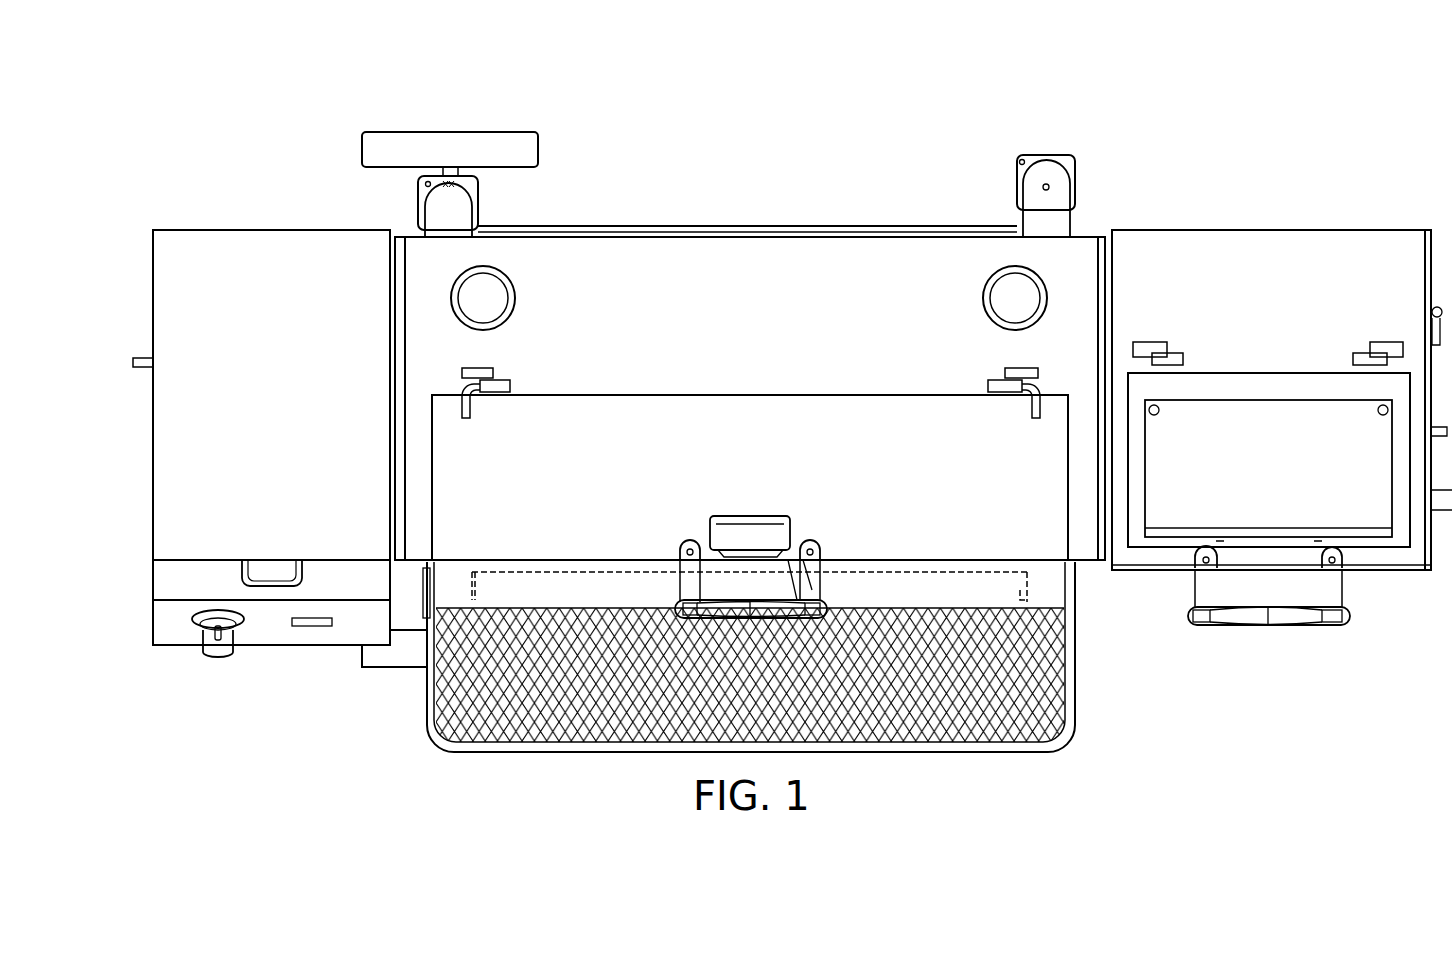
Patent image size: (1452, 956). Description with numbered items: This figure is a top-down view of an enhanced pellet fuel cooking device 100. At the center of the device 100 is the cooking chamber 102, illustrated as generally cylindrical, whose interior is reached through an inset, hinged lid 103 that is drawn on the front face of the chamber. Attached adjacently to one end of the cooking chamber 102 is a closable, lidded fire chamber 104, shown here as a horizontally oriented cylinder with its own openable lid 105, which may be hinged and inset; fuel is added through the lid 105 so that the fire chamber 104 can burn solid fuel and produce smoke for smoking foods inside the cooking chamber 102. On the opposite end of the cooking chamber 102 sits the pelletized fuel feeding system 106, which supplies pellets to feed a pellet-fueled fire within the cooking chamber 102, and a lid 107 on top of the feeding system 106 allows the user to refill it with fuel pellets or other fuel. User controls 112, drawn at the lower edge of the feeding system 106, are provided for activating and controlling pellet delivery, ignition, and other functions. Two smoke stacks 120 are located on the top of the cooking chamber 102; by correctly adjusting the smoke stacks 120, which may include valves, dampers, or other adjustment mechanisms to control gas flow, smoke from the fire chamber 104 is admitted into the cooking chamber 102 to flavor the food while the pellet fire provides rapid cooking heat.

The enhanced pellet fuel cooking device 100 is at (1178, 120).
The cooking chamber 102 is at (769, 325).
The inset, hinged lid 103 is at (769, 470).
The fire chamber 104 is at (1289, 313).
The openable lid 105 is at (1289, 484).
The pelletized fuel feeding system 106 is at (153, 520).
The lid 107 is at (290, 423).
The user controls 112 is at (218, 660).
The smoke stacks 120 is at (517, 302).